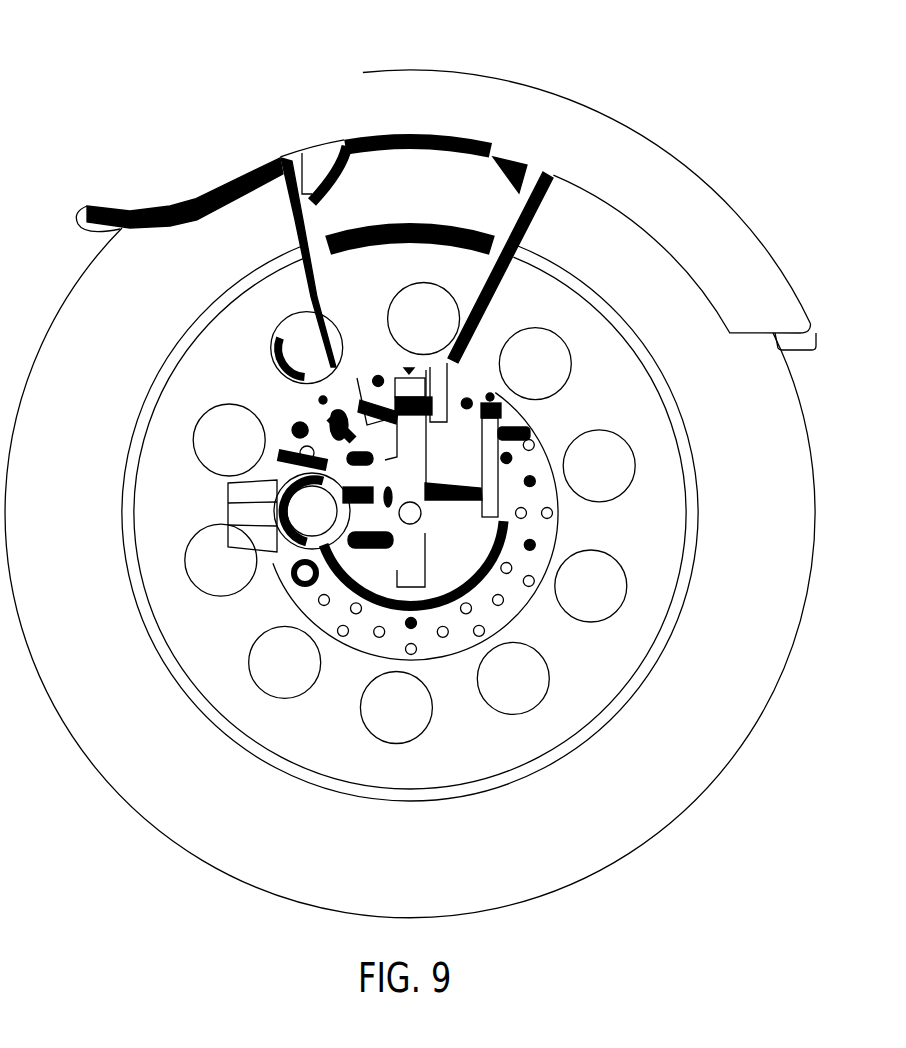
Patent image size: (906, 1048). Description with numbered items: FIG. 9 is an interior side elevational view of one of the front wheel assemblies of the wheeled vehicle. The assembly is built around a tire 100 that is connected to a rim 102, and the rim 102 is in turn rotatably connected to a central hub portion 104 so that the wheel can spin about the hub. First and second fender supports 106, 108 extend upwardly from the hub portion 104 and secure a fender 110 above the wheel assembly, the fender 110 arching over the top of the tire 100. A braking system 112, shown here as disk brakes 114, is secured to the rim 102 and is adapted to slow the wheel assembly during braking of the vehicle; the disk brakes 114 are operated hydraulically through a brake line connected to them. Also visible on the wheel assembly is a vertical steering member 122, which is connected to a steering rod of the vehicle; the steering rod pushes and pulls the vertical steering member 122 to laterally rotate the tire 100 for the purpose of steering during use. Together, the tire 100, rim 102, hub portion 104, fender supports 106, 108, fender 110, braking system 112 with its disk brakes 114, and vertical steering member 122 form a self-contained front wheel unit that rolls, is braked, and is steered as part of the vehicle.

The tire 100 is at (747, 672).
The rim 102 is at (605, 678).
The hub portion 104 is at (466, 560).
The first fender support 106 is at (350, 142).
The second fender support 108 is at (480, 97).
The fender 110 is at (726, 238).
The braking system 112 is at (247, 512).
The disk brakes 114 is at (433, 648).
The vertical steering member 122 is at (503, 420).